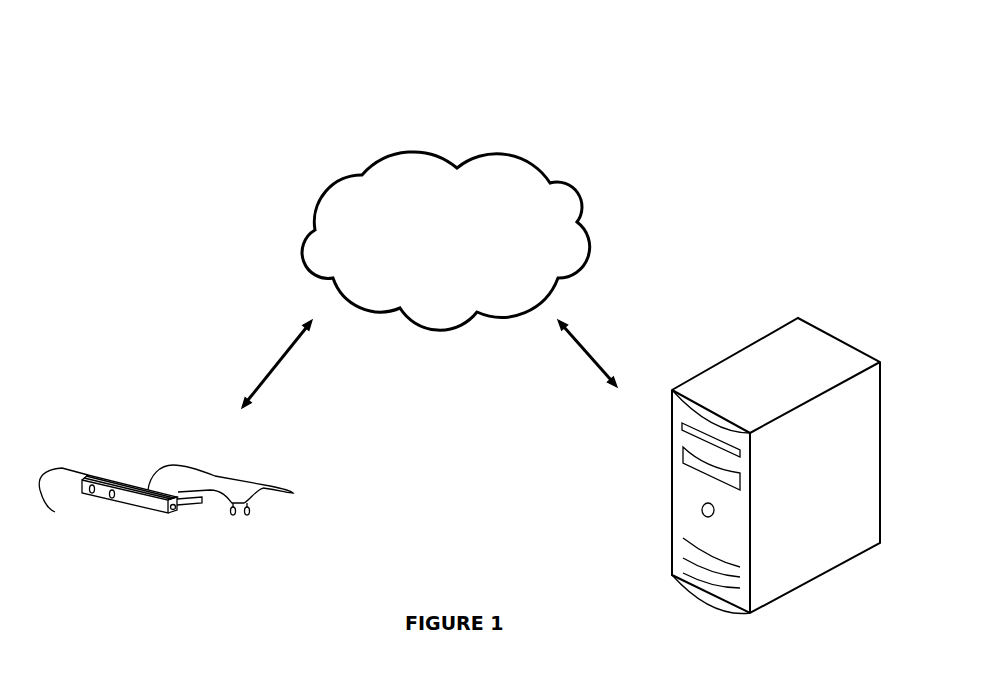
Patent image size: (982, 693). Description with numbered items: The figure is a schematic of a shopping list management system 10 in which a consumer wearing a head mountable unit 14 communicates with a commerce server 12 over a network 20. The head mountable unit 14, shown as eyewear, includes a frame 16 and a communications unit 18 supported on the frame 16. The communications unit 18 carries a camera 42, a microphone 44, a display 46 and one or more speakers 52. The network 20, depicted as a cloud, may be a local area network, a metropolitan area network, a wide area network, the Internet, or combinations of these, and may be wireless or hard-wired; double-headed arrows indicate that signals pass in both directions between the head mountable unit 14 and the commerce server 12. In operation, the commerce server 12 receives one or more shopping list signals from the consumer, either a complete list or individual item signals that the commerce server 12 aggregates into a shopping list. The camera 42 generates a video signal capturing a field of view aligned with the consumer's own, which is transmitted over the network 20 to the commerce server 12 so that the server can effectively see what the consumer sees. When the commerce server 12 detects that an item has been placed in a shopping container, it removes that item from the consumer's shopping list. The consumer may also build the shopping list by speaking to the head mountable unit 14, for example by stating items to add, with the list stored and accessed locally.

The shopping list management system 10 is at (460, 42).
The commerce server 12 is at (768, 610).
The head mountable unit 14 is at (99, 415).
The frame 16 is at (208, 468).
The communications unit 18 is at (88, 567).
The network 20 is at (525, 157).
The camera 42 is at (177, 517).
The microphone 44 is at (112, 513).
The display 46 is at (192, 507).
The speaker 52 is at (90, 497).